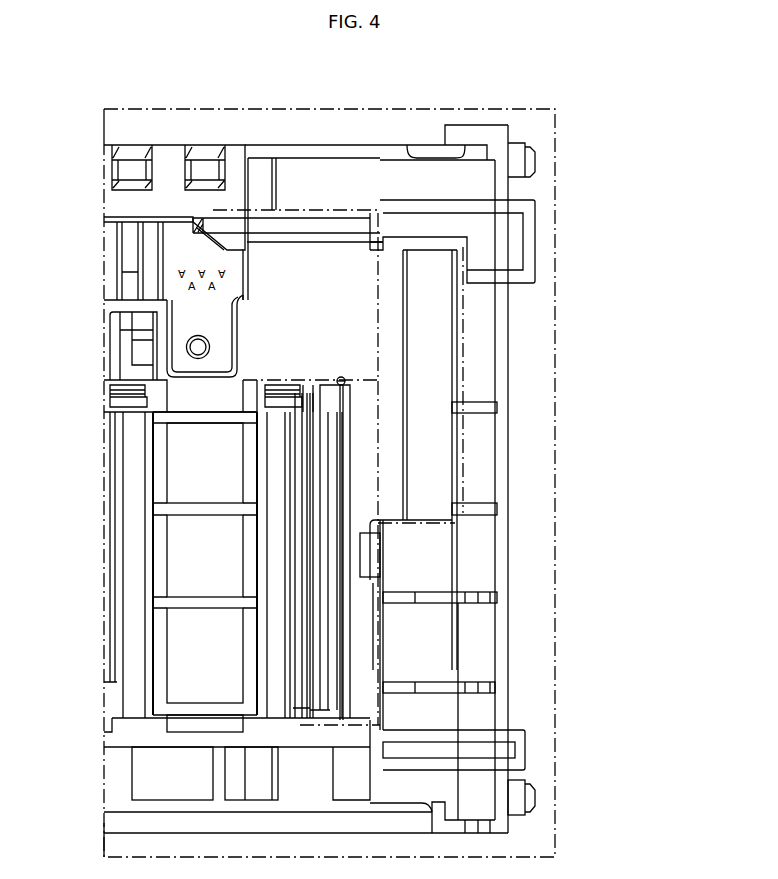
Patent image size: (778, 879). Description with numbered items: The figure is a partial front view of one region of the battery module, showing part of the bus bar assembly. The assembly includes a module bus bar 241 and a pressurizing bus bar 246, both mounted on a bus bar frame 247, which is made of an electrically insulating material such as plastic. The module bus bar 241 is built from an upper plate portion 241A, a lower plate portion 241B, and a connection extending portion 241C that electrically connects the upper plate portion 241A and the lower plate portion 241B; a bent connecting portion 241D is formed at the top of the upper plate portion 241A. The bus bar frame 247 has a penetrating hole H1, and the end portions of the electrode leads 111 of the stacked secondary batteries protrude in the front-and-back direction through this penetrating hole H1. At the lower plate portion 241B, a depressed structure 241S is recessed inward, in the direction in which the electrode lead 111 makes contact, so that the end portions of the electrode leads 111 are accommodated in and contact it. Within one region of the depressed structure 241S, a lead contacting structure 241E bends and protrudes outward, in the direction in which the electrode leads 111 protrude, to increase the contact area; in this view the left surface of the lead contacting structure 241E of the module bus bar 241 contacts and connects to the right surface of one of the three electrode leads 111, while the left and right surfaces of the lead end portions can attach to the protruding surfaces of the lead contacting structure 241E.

The bus bar frame 247 is at (258, 145).
The module bus bar 241 is at (635, 186).
The bent connecting portion 241D is at (345, 215).
The upper plate portion 241A is at (383, 297).
The connection extending portion 241C is at (463, 368).
The lower plate portion 241B is at (380, 613).
The lead contacting structure 241E is at (328, 656).
The depressed structure 241S is at (300, 388).
The penetrating hole H1 is at (303, 462).
The pressurizing bus bar 246 is at (273, 542).
The electrode lead 111 is at (300, 622).